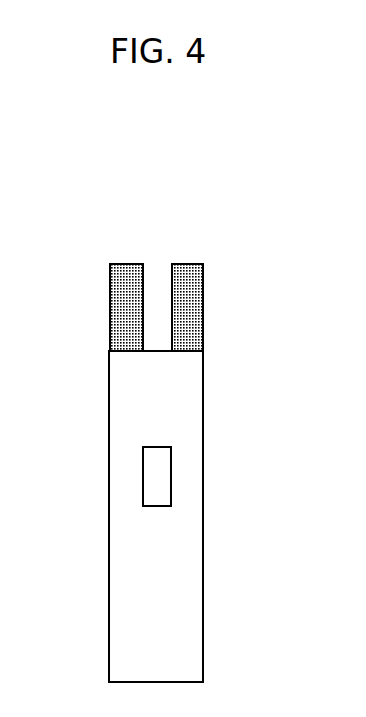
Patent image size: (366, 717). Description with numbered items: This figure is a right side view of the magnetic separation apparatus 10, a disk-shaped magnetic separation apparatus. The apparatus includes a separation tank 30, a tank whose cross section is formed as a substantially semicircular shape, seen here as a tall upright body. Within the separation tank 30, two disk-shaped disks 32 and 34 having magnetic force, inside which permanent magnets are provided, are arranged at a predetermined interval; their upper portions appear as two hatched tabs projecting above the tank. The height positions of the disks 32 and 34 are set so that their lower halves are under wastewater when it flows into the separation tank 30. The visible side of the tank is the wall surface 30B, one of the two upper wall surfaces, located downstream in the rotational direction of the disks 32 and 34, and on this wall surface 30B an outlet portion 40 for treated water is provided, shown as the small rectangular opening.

The magnetic separation apparatus 10 is at (217, 258).
The separation tank 30 is at (207, 413).
The wall surface 30B is at (118, 395).
The disk 32 is at (115, 300).
The disk 34 is at (200, 302).
The outlet portion 40 is at (162, 472).